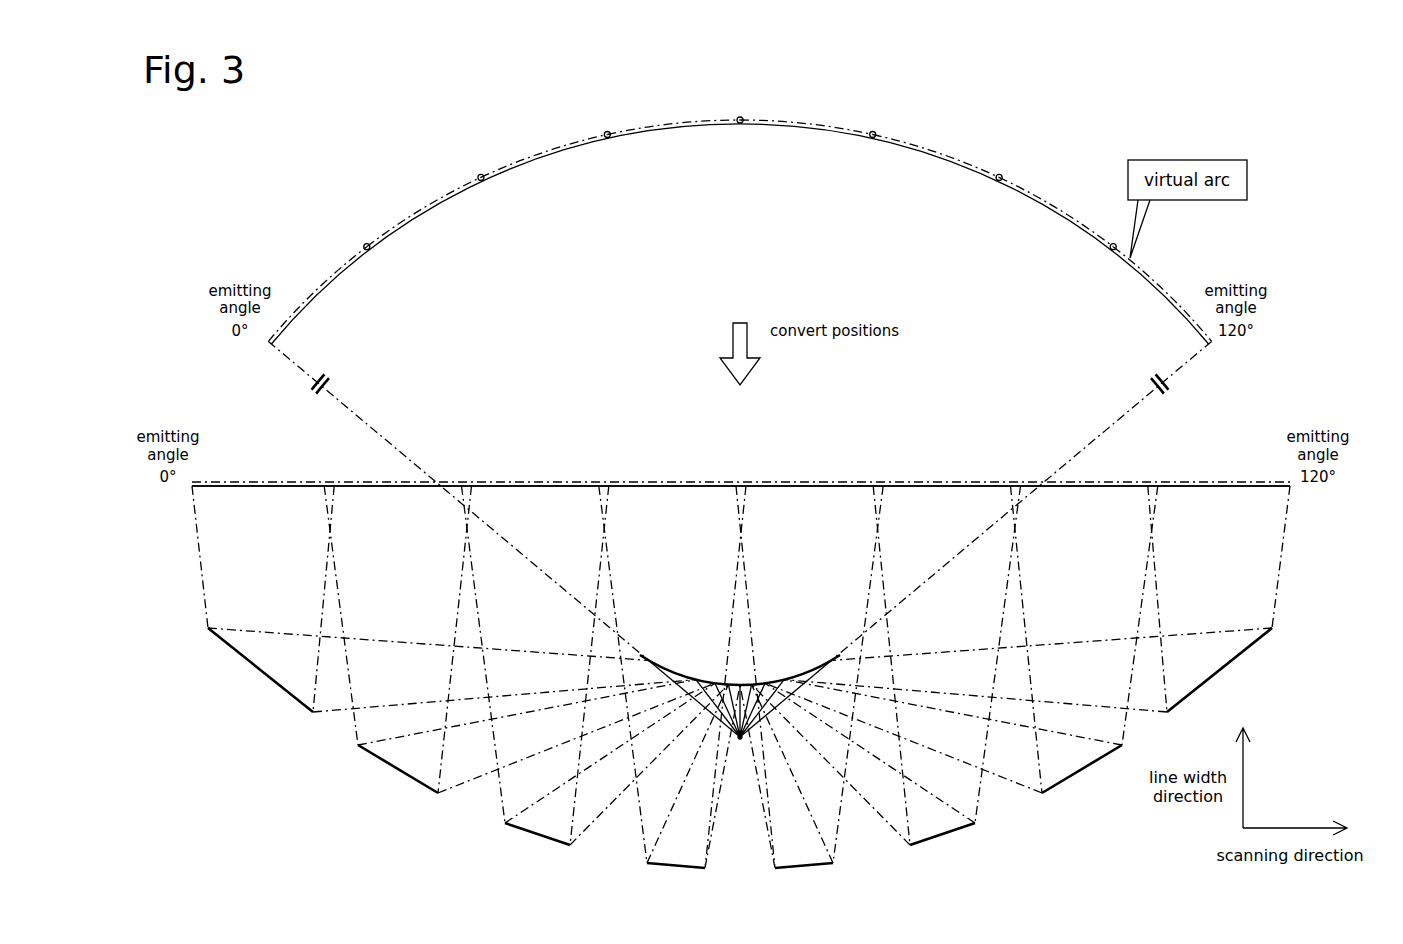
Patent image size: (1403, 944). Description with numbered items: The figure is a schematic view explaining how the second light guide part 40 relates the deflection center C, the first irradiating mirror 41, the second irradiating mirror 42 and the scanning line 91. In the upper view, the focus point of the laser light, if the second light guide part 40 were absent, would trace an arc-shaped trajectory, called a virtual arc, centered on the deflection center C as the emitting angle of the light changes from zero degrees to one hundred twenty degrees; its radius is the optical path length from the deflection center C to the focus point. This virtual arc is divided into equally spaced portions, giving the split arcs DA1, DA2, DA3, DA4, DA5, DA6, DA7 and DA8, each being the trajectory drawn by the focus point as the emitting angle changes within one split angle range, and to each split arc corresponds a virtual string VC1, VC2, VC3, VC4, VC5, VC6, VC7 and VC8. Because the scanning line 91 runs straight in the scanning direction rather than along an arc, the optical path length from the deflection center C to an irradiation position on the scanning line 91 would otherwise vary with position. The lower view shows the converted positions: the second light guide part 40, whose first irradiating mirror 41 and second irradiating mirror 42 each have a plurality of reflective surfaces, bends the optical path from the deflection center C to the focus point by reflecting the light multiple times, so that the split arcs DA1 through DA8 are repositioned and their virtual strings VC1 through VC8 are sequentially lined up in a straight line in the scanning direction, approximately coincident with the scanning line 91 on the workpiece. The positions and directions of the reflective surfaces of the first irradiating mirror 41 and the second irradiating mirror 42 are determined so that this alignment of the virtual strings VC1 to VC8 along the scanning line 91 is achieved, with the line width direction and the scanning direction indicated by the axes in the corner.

The second light guide part 40 is at (290, 758).
The first irradiating mirror 41 is at (692, 668).
The second irradiating mirror 42 is at (525, 833).
The scanning line 91 is at (1254, 487).
The deflection center C is at (740, 745).
The split arc DA1 is at (316, 290).
The split arc DA2 is at (422, 209).
The split arc DA3 is at (583, 473).
The split arc DA4 is at (673, 124).
The split arc DA5 is at (807, 124).
The split arc DA6 is at (937, 152).
The split arc DA7 is at (1058, 209).
The split arc DA8 is at (1164, 290).
The virtual string VC1 is at (318, 293).
The virtual string VC2 is at (424, 212).
The virtual string VC3 is at (545, 156).
The virtual string VC4 is at (675, 127).
The virtual string VC5 is at (805, 127).
The virtual string VC6 is at (935, 156).
The virtual string VC7 is at (1056, 212).
The virtual string VC8 is at (1162, 293).